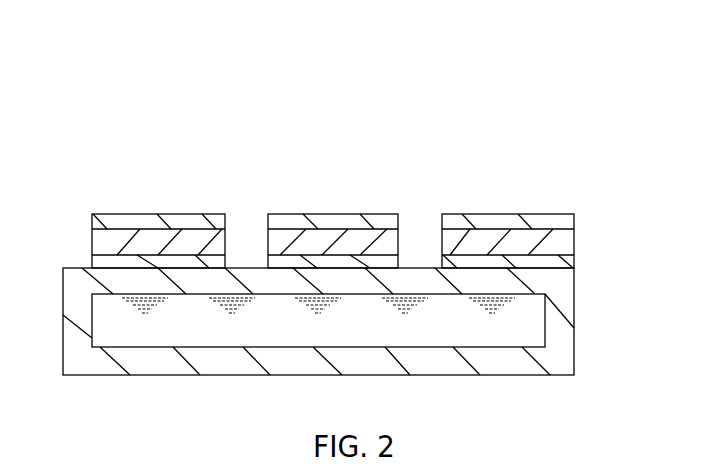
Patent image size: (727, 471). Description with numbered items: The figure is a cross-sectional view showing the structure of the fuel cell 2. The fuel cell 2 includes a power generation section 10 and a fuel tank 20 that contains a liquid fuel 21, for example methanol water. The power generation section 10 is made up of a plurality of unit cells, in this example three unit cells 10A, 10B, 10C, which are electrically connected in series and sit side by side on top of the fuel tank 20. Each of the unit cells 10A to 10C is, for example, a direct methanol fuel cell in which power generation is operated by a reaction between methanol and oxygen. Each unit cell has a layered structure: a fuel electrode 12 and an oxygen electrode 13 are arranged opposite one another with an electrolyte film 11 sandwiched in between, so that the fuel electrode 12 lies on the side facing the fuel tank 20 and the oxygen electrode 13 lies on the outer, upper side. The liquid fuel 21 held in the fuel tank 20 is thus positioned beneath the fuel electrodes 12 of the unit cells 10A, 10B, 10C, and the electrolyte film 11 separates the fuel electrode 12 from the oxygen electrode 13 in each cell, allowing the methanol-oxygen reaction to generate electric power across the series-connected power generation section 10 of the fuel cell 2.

The fuel cell 2 is at (576, 57).
The power generation section 10 is at (530, 115).
The unit cell 10A is at (157, 209).
The unit cell 10B is at (332, 209).
The unit cell 10C is at (506, 207).
The electrolyte film 11 is at (563, 238).
The fuel electrode 12 is at (563, 254).
The oxygen electrode 13 is at (563, 220).
The fuel tank 20 is at (562, 293).
The liquid fuel 21 is at (527, 318).